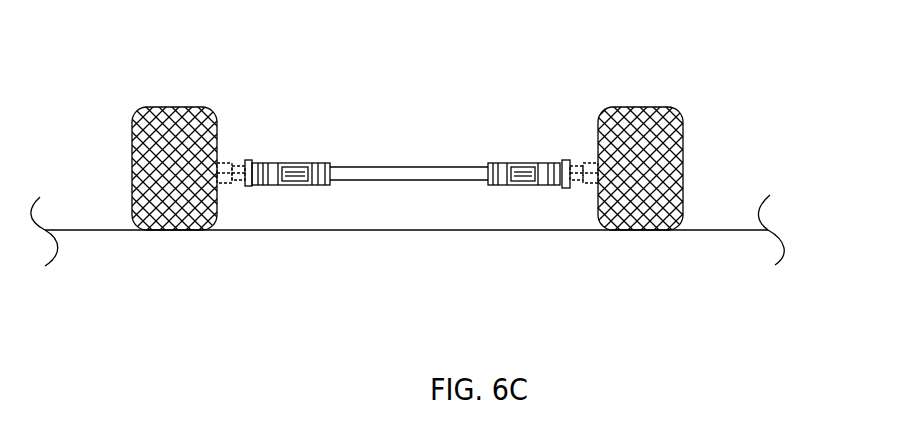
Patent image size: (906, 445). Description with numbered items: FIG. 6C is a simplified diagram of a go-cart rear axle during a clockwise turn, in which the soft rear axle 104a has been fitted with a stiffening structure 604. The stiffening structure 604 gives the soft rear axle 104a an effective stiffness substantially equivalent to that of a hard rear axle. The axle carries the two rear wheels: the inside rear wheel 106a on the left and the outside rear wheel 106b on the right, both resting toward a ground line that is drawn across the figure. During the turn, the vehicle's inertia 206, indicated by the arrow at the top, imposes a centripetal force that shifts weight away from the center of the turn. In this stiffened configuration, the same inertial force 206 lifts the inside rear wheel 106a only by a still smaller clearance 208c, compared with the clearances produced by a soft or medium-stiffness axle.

The inertial force 206 is at (560, 26).
The clearance 208c is at (137, 243).
The inside rear wheel 106a is at (197, 243).
The rear wheel 106b is at (611, 243).
The soft rear axle 104a is at (356, 152).
The stiffening structure 604 is at (296, 148).